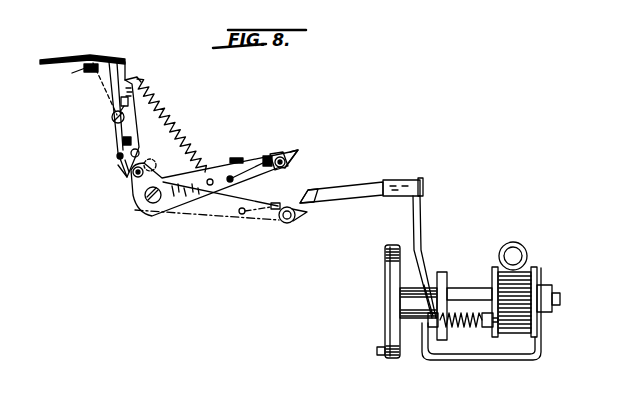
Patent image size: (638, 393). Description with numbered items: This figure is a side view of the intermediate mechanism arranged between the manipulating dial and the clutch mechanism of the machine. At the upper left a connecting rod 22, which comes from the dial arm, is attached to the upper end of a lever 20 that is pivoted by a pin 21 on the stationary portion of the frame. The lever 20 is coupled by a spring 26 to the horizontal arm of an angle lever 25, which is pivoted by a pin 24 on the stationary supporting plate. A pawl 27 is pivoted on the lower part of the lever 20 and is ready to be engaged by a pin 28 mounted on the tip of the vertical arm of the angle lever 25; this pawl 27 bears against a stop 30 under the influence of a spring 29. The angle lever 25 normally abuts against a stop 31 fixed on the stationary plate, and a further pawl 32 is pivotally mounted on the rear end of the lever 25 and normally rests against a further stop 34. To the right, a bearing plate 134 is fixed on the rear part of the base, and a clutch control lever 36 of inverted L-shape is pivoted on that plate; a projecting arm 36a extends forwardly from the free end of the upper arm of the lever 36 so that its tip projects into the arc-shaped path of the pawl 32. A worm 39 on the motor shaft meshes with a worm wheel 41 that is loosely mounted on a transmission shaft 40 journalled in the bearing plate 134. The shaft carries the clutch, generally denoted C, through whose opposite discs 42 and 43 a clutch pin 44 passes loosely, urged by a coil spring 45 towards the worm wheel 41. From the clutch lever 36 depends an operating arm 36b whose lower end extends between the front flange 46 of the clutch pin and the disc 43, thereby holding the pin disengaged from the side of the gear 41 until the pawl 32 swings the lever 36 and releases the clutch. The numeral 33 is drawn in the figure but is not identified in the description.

The lever 20 is at (88, 71).
The pin 21 is at (111, 118).
The connecting rod 22 is at (57, 58).
The pin 24 is at (140, 207).
The angle lever 25 is at (180, 208).
The spring 26 is at (181, 127).
The pawl 27 is at (115, 172).
The pin 28 is at (132, 175).
The spring 29 is at (115, 129).
The stop 30 is at (114, 153).
The stop 31 is at (237, 152).
The pawl 32 is at (299, 154).
The connecting rod block 33 is at (273, 157).
The stop 34 is at (283, 157).
The clutch control lever 36 is at (399, 182).
The projecting arm 36a is at (323, 201).
The operating arm 36b is at (432, 292).
The bearing plate 134 is at (410, 213).
The disc 43 is at (441, 270).
The clutch C is at (482, 270).
The worm 39 is at (528, 250).
The transmission shaft 40 is at (561, 300).
The worm wheel 41 is at (513, 333).
The disc 42 is at (497, 338).
The clutch pin 44 is at (488, 329).
The coil spring 45 is at (462, 330).
The front flange 46 is at (433, 329).